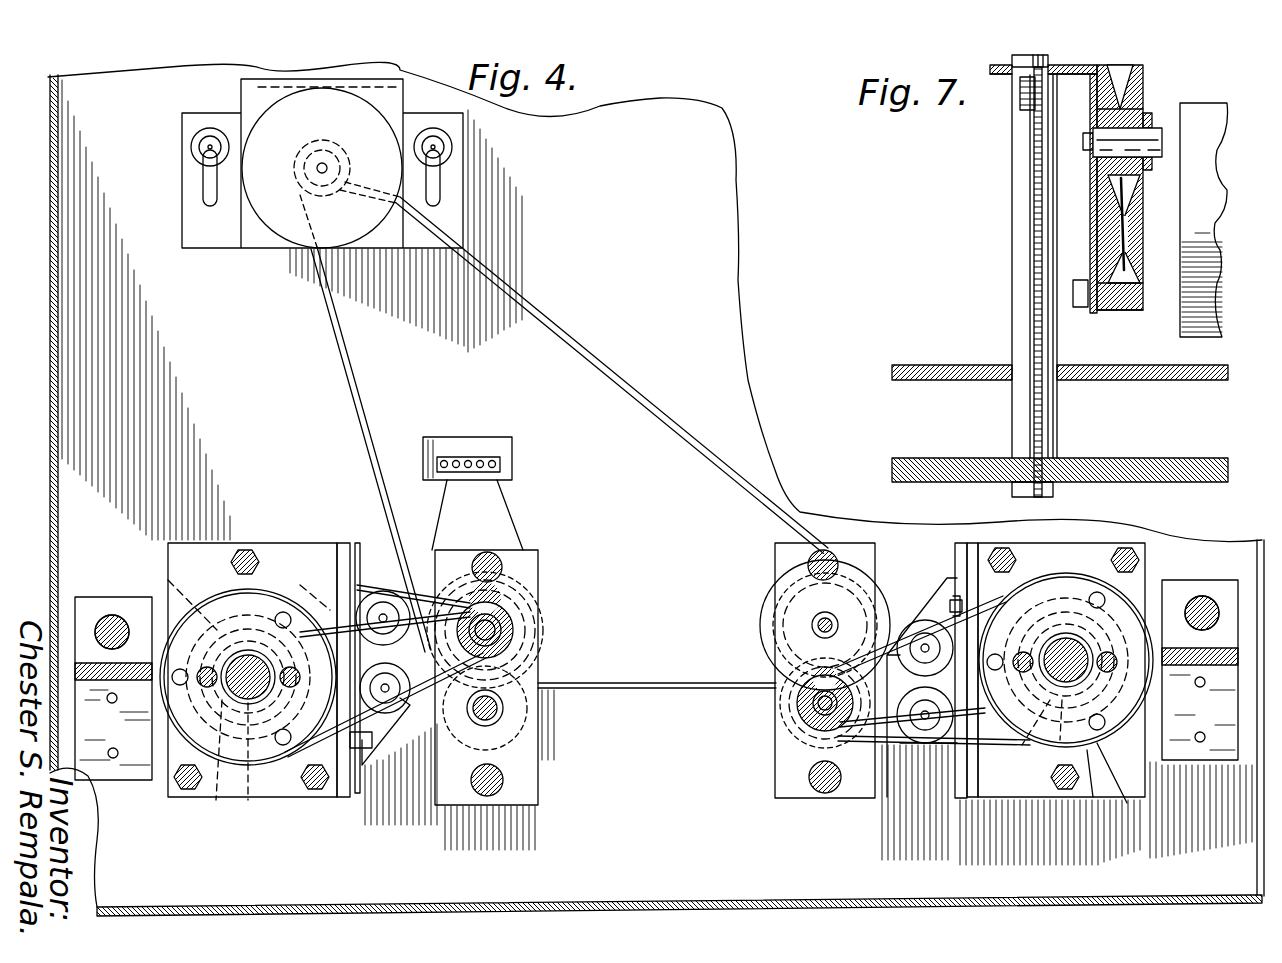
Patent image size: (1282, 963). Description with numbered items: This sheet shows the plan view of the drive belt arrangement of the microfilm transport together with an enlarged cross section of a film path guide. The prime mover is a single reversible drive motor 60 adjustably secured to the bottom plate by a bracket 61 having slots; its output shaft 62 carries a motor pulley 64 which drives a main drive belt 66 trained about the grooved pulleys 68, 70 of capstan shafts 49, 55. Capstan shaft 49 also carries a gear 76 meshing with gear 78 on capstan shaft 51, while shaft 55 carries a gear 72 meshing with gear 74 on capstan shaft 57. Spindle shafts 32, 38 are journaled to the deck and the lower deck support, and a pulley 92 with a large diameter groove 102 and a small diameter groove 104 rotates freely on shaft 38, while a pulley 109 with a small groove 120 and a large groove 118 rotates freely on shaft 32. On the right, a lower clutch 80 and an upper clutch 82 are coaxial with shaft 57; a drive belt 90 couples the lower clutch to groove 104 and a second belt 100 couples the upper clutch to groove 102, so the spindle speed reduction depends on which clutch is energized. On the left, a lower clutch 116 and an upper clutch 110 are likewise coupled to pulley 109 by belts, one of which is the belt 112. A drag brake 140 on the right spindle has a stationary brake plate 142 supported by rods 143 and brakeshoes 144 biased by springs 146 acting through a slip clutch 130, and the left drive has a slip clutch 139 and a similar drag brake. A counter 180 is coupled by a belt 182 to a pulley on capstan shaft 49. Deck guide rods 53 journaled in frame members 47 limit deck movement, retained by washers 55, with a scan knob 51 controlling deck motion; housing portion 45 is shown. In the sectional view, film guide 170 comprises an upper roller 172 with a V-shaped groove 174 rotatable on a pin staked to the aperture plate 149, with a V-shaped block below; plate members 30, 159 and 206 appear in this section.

In FIG. 7, the upper frame plate 30 is at (968, 365).
In FIG. 4, the spindle shaft 32 is at (246, 660).
In FIG. 4, the spindle shaft 38 is at (1085, 672).
In FIG. 4, the housing 45 is at (662, 825).
In FIG. 4, the frame member 47 is at (88, 668).
In FIG. 4, the capstan shaft 49 is at (498, 624).
In FIG. 7, the capstan shaft 49 is at (950, 458).
In FIG. 4, the capstan shaft 51 is at (505, 708).
In FIG. 4, the deck guide rod 53 is at (110, 616).
In FIG. 4, the capstan shaft 55 is at (815, 618).
In FIG. 4, the capstan shaft 57 is at (800, 716).
In FIG. 4, the drive motor 60 is at (270, 120).
In FIG. 4, the bracket 61 is at (465, 205).
In FIG. 4, the output shaft 62 is at (323, 150).
In FIG. 4, the motor pulley 64 is at (332, 190).
In FIG. 4, the main drive belt 66 is at (490, 290).
In FIG. 4, the grooved pulley 68 is at (540, 672).
In FIG. 4, the pulley 70 is at (770, 622).
In FIG. 4, the gear 72 is at (785, 604).
In FIG. 4, the gear 74 is at (790, 712).
In FIG. 4, the gear 76 is at (535, 650).
In FIG. 4, the gear 78 is at (525, 735).
In FIG. 4, the clutch 80 is at (805, 722).
In FIG. 4, the upper clutch 82 is at (815, 712).
In FIG. 4, the drive belt 90 is at (905, 708).
In FIG. 4, the pulley 92 is at (1090, 595).
In FIG. 4, the belt 100 is at (900, 750).
In FIG. 4, the large diameter groove 102 is at (1092, 800).
In FIG. 4, the small diameter groove 104 is at (1000, 655).
In FIG. 4, the pulley 109 is at (262, 592).
In FIG. 4, the upper clutch 110 is at (500, 600).
In FIG. 4, the belt 112 is at (420, 725).
In FIG. 4, the lower clutch 116 is at (505, 612).
In FIG. 4, the belt 118 is at (345, 610).
In FIG. 4, the small pulley groove 120 is at (242, 765).
In FIG. 4, the slip clutch 130 is at (1145, 765).
In FIG. 4, the slip clutch 139 is at (215, 802).
In FIG. 4, the drag brake 140 is at (1012, 745).
In FIG. 4, the brake plate 142 is at (1070, 590).
In FIG. 4, the rod 143 is at (1025, 650).
In FIG. 4, the brakeshoe 144 is at (1145, 572).
In FIG. 4, the spring 146 is at (175, 595).
In FIG. 7, the aperture plate 149 is at (1090, 242).
In FIG. 7, the vertical bar 159 is at (1012, 192).
In FIG. 7, the film guide 170 is at (1145, 80).
In FIG. 7, the upper roller 172 is at (1150, 114).
In FIG. 7, the V-shaped groove 174 is at (1128, 205).
In FIG. 4, the counter 180 is at (512, 463).
In FIG. 4, the belt 182 is at (445, 520).
In FIG. 7, the belt 182 is at (1140, 308).
In FIG. 7, the side plate 206 is at (1182, 333).